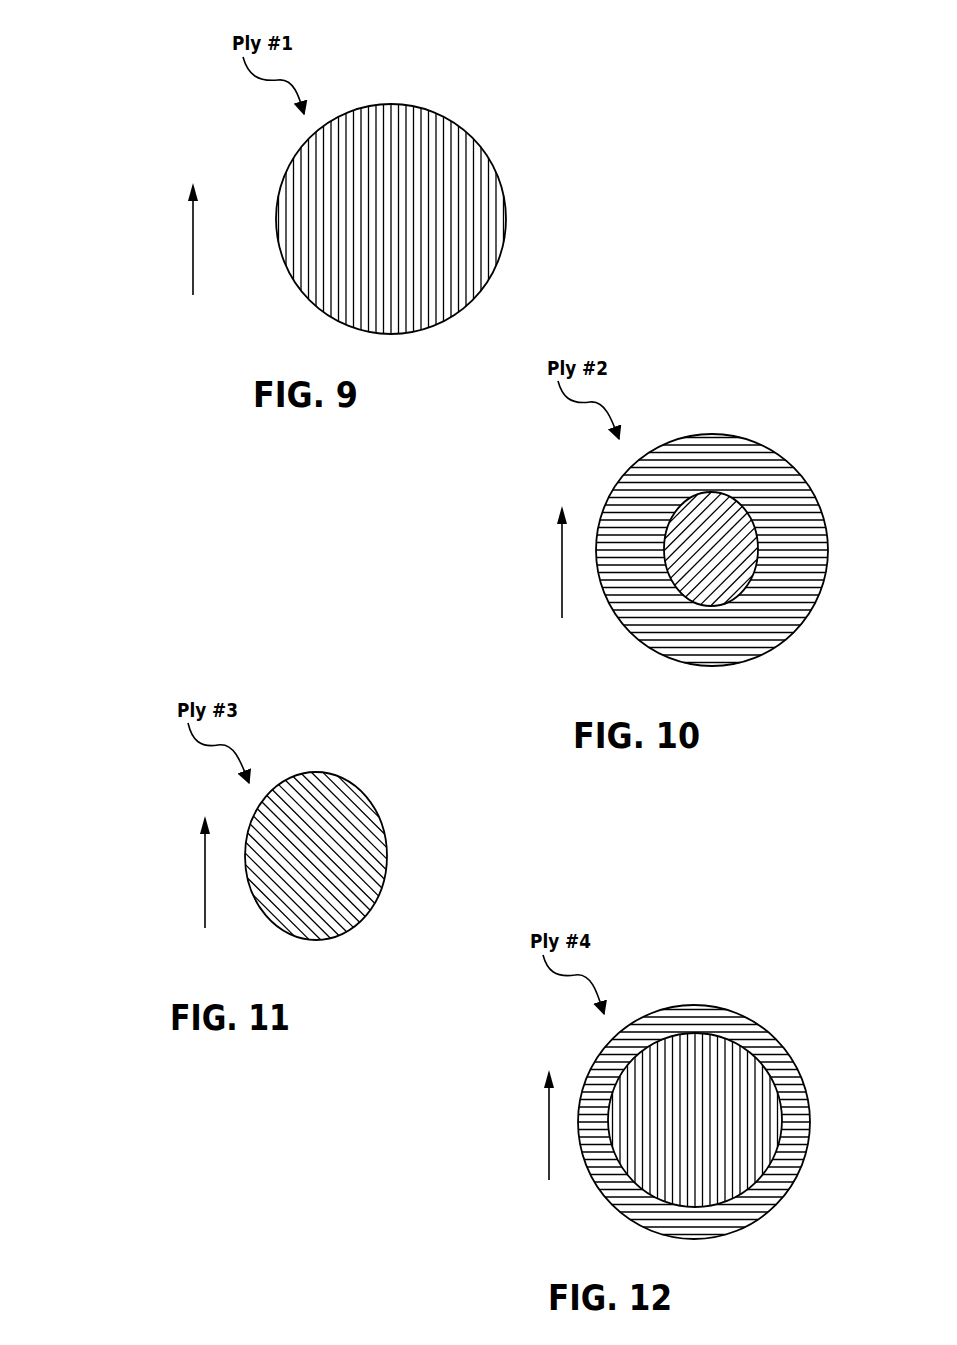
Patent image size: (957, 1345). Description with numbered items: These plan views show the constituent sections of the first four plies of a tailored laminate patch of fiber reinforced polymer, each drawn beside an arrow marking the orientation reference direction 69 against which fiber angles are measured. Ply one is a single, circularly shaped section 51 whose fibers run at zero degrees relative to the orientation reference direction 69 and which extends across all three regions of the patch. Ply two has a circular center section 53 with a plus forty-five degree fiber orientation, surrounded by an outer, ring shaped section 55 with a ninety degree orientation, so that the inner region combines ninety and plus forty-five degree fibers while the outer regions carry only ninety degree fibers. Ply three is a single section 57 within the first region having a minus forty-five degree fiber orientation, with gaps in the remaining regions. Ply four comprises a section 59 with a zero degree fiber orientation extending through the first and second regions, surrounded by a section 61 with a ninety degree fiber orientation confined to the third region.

In FIG. 9, the circularly shaped section 51 is at (457, 192).
In FIG. 10, the circular center section 53 is at (727, 547).
In FIG. 10, the outer portion of second ply with 90-degree fiber orientation 55 is at (768, 483).
In FIG. 11, the section 57 is at (360, 822).
In FIG. 12, the section 59 is at (735, 1141).
In FIG. 12, the section 61 is at (783, 1082).
In FIG. 9, the orientation reference direction 69 is at (193, 252).
In FIG. 10, the orientation reference direction 69 is at (562, 592).
In FIG. 11, the orientation reference direction 69 is at (205, 912).
In FIG. 12, the orientation reference direction 69 is at (549, 1152).